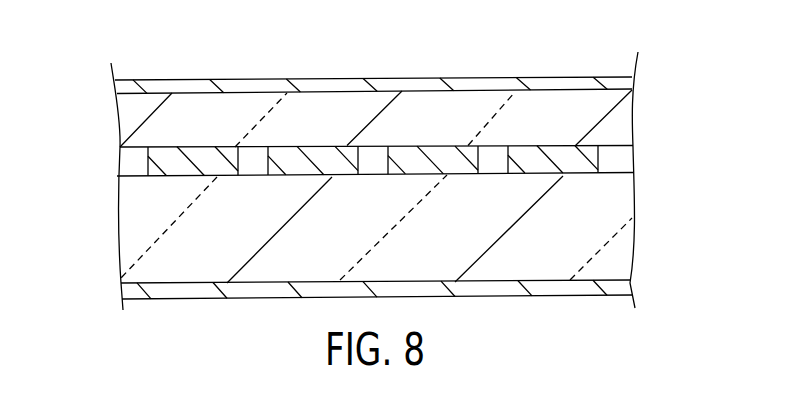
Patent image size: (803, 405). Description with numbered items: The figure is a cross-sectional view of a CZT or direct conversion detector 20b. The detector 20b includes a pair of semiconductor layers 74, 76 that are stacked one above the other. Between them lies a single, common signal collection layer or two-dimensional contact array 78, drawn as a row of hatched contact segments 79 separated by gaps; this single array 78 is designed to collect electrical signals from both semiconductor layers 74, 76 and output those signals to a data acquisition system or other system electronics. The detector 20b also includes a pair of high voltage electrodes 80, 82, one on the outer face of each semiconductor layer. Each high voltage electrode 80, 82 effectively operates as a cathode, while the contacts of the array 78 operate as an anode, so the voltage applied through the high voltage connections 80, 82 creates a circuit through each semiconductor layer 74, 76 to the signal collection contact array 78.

The detector 20b is at (80, 78).
The semiconductor layer 74 is at (622, 128).
The semiconductor layer 76 is at (607, 210).
The signal collection layer or 2D contact array 78 is at (643, 158).
The core segments 79 is at (178, 167).
The high voltage electrode 80 is at (618, 83).
The high voltage electrode 82 is at (618, 288).